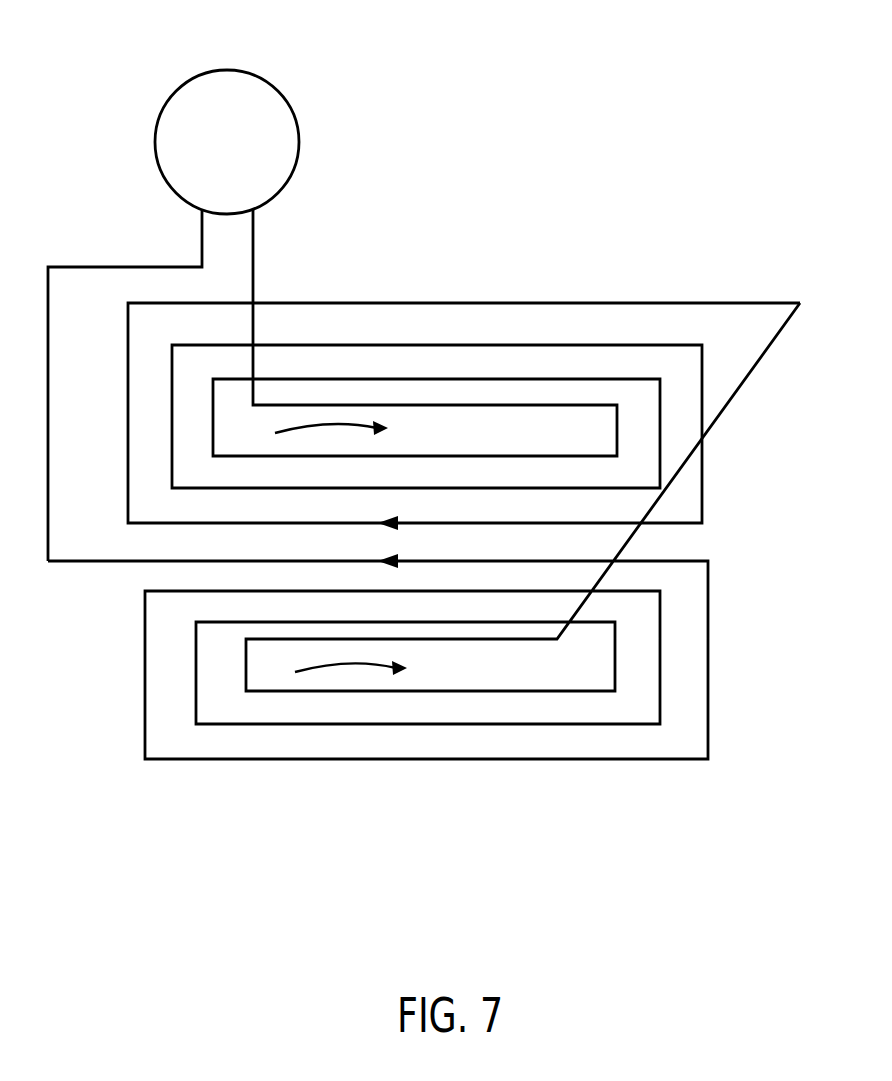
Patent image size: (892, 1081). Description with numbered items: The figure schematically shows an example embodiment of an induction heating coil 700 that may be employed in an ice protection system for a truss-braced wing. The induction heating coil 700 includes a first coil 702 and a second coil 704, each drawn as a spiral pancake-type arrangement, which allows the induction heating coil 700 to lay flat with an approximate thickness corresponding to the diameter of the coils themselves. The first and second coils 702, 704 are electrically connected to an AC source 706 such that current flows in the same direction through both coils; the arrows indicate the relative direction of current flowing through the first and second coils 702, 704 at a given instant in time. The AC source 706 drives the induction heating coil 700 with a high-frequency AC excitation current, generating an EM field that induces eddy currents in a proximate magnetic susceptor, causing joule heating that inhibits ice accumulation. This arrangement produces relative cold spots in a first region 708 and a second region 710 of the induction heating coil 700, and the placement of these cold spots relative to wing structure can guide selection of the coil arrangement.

The induction heating coil 700 is at (699, 112).
The first coil 702 is at (485, 303).
The second coil 704 is at (460, 760).
The AC source 706 is at (237, 71).
The first region 708 is at (313, 433).
The second region 710 is at (332, 666).